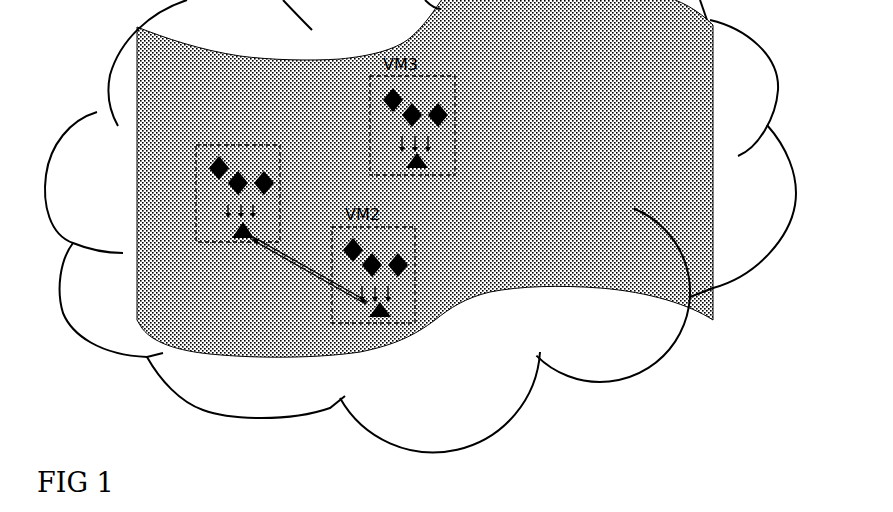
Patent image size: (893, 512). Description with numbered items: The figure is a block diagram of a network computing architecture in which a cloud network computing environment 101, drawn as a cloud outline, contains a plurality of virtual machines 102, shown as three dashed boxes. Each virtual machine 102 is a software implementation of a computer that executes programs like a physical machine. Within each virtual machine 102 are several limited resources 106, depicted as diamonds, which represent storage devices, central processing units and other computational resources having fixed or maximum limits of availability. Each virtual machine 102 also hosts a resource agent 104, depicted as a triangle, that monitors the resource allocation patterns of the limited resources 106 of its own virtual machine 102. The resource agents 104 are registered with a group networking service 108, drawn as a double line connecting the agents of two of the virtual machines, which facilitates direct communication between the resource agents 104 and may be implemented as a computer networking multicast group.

The cloud network computing environment 101 is at (186, 399).
The virtual machine 102 is at (261, 144).
The resource agent 104 is at (241, 234).
The limited resource 106 is at (268, 181).
The group networking service 108 is at (317, 280).